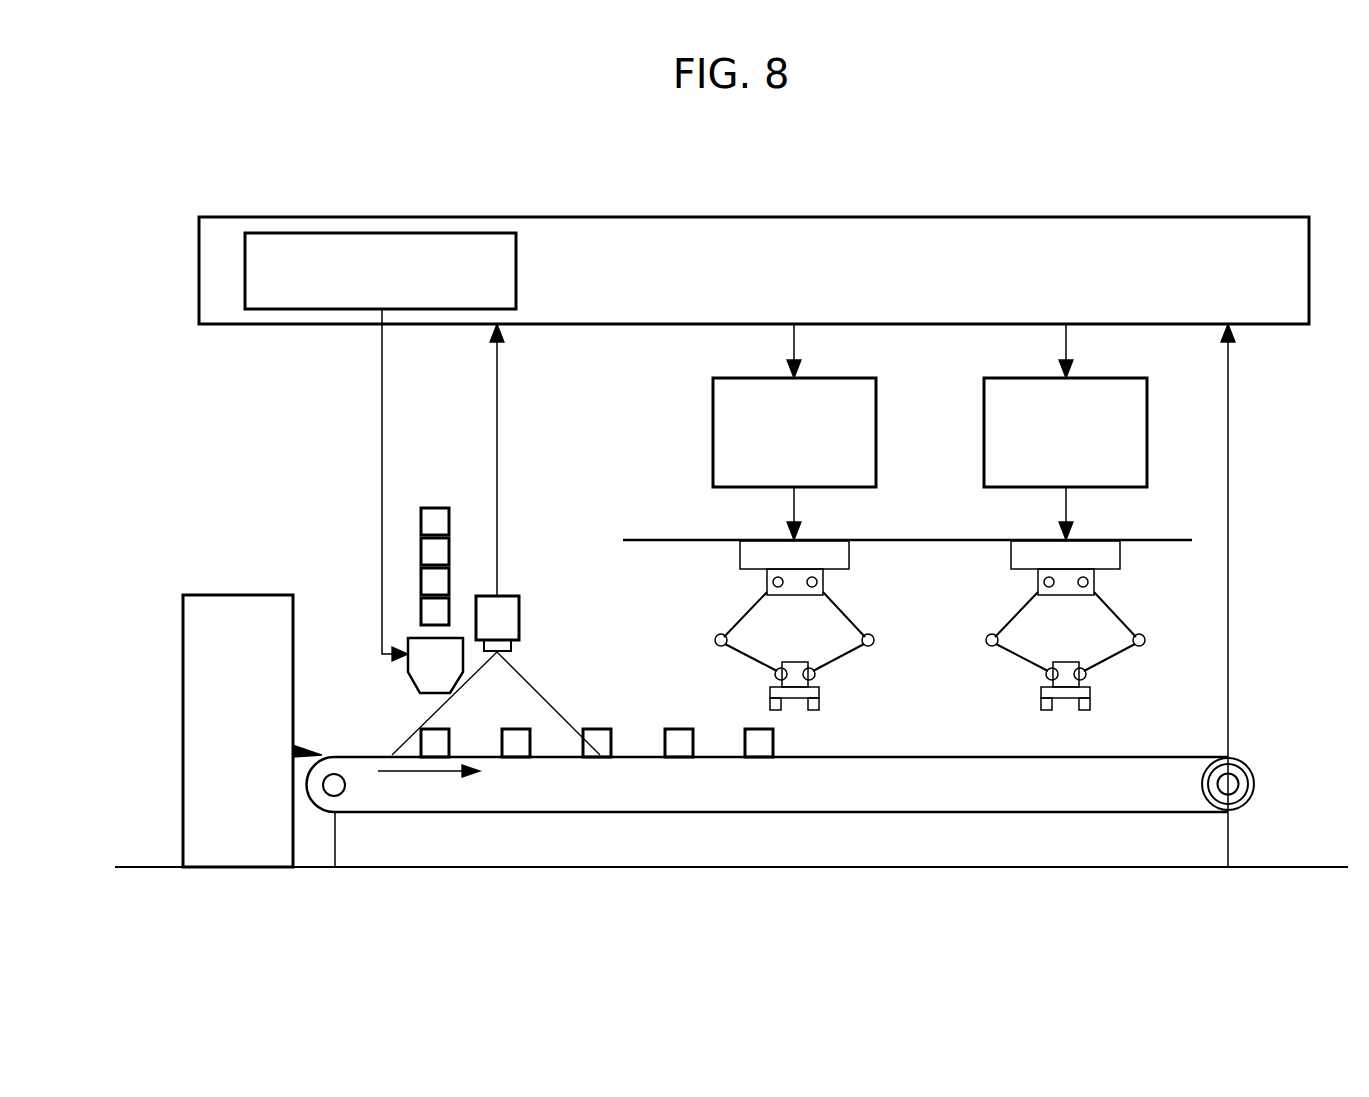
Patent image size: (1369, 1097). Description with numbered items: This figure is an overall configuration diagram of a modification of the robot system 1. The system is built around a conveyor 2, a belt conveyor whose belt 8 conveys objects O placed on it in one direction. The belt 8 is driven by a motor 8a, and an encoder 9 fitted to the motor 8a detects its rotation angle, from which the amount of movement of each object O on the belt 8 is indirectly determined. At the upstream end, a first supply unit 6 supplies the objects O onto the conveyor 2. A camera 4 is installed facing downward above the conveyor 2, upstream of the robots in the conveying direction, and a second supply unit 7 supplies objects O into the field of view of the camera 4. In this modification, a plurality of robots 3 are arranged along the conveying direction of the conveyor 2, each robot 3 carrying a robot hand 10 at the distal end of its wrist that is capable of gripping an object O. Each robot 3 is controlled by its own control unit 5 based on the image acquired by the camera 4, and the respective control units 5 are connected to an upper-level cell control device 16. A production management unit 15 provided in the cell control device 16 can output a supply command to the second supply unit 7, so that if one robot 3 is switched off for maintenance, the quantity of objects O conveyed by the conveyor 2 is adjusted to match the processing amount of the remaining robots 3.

The robot system 1 is at (172, 198).
The cell control device 16 is at (758, 217).
The production management unit 15 is at (373, 233).
The control unit 5 is at (713, 434).
The robot 3 is at (1140, 600).
The robot hand 10 is at (812, 710).
The first supply unit 6 is at (236, 595).
The second supply unit 7 is at (408, 678).
The camera 4 is at (519, 618).
The object O is at (672, 729).
The belt 8 is at (1120, 757).
The conveyor 2 is at (1178, 743).
The encoder 9 is at (1234, 778).
The motor 8a is at (1255, 785).